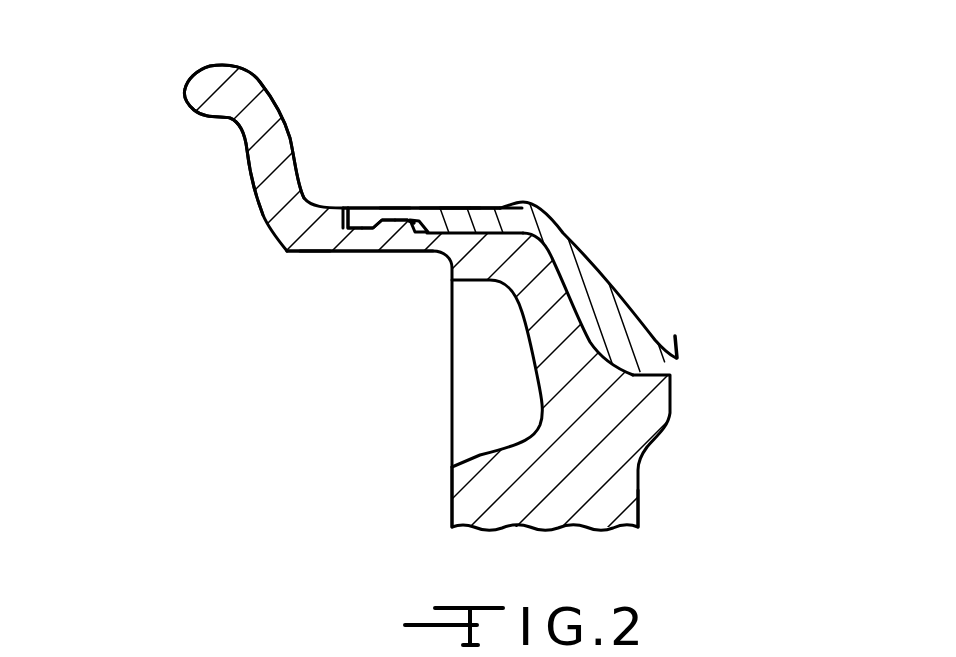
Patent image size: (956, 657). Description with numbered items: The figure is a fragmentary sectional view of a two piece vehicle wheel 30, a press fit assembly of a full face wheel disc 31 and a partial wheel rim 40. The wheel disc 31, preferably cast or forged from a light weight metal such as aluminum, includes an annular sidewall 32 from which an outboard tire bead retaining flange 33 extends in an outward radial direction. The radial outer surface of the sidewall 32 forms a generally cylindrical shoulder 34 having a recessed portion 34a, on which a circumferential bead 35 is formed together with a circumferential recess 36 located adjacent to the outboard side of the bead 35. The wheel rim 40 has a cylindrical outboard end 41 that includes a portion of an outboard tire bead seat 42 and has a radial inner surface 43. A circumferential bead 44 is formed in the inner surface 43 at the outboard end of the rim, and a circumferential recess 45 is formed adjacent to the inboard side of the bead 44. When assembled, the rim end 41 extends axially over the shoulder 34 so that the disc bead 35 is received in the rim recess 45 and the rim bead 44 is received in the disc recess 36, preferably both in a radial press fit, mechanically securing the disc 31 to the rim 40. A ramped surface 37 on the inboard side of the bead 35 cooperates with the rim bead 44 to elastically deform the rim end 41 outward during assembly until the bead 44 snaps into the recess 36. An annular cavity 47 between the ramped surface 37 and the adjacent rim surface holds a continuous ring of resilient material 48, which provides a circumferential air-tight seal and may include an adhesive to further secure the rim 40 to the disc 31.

The two piece vehicle wheel 30 is at (657, 74).
The full face wheel disc 31 is at (205, 178).
The annular sidewall 32 is at (470, 500).
The outboard tire bead retaining flange 33 is at (293, 138).
The shoulder 34 is at (292, 254).
The recessed portion 34a is at (420, 228).
The bead 35 is at (387, 225).
The recess 36 is at (312, 251).
The ramped surface 37 is at (402, 225).
The wheel rim 40 is at (625, 288).
The cylindrical outboard end 41 is at (470, 208).
The outboard tire bead seat 42 is at (468, 130).
The radial inner surface 43 is at (492, 209).
The bead 44 is at (360, 220).
The recess 45 is at (393, 207).
The annular cavity 47 is at (450, 208).
The ring of resilient material 48 is at (498, 238).